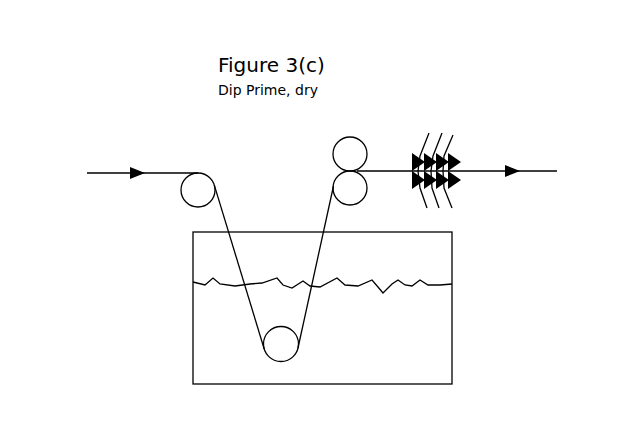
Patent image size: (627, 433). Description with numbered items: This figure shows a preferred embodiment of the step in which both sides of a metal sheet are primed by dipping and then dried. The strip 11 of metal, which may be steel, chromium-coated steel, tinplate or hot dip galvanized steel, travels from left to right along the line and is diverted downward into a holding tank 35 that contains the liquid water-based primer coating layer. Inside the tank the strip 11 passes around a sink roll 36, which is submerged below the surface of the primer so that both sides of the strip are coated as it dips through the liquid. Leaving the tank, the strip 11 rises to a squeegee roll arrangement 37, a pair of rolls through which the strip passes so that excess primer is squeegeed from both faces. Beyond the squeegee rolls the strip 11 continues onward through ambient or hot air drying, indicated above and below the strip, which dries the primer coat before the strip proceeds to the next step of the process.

The strip 11 is at (127, 175).
The holding tank 35 is at (193, 307).
The sink roll 36 is at (293, 358).
The squeegee roll arrangement 37 is at (368, 148).